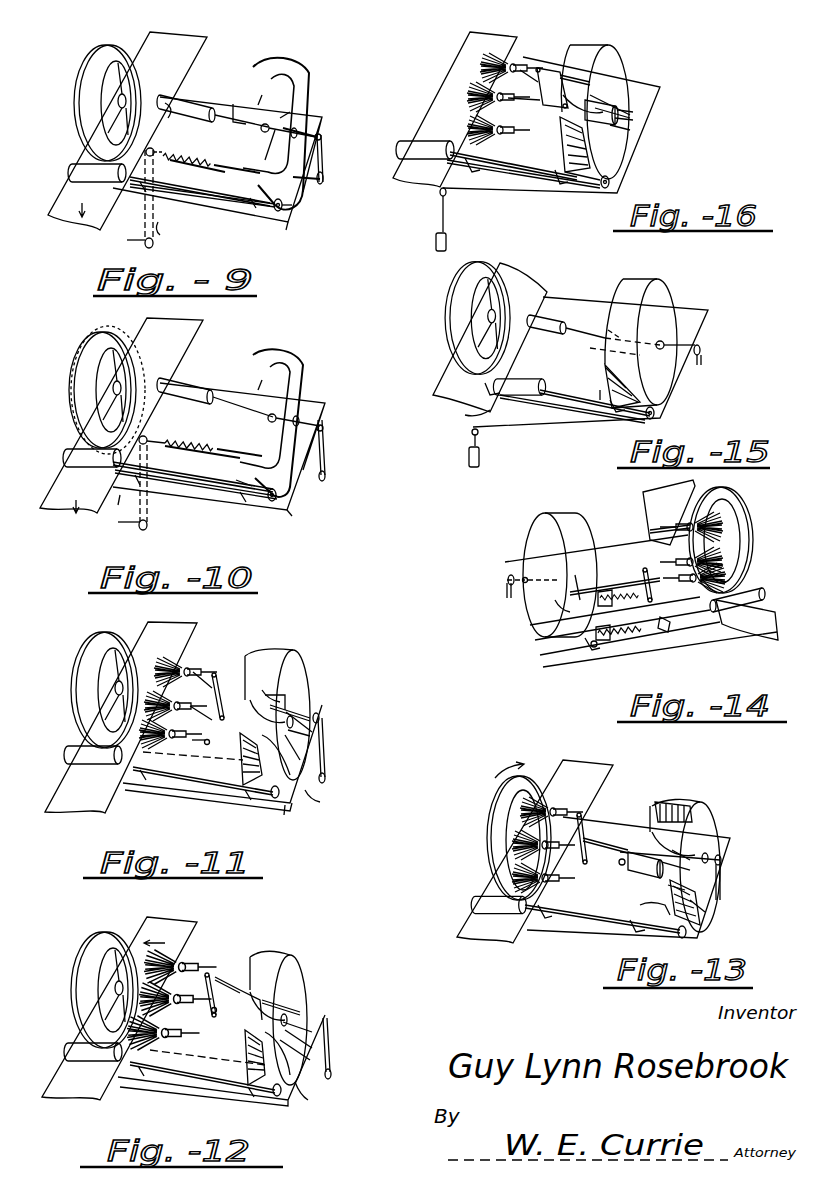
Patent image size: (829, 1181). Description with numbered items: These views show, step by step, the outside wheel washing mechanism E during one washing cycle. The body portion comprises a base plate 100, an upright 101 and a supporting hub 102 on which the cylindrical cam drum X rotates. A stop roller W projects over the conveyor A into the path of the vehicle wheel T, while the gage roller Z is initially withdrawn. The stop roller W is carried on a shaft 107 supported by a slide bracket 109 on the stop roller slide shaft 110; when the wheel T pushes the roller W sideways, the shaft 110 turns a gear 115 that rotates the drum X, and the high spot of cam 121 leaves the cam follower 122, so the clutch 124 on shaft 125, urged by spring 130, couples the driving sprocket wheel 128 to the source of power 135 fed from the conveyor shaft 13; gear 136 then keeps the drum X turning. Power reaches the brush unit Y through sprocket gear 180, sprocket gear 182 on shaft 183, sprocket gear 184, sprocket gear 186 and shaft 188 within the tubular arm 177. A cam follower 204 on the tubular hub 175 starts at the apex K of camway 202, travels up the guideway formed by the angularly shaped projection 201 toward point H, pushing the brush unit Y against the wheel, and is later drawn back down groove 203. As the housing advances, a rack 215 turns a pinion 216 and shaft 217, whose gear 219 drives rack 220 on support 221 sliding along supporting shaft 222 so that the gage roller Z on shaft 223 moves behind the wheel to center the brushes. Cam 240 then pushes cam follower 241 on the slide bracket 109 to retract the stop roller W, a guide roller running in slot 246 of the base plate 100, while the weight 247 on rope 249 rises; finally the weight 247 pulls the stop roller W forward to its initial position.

In FIG. 9, the conveyor shaft 13 is at (180, 245).
In FIG. 10, the conveyor shaft 13 is at (166, 535).
In FIG. 9, the base plate 100 is at (177, 234).
In FIG. 10, the base plate 100 is at (121, 506).
In FIG. 11, the base plate 100 is at (122, 790).
In FIG. 14, the base plate 100 is at (656, 546).
In FIG. 13, the base plate 100 is at (526, 930).
In FIG. 9, the upright 101 is at (244, 108).
In FIG. 10, the upright 101 is at (266, 412).
In FIG. 9, the supporting hub 102 is at (270, 127).
In FIG. 10, the supporting hub 102 is at (277, 417).
In FIG. 15, the supporting hub 102 is at (666, 344).
In FIG. 9, the shaft 107 is at (99, 201).
In FIG. 10, the shaft 107 is at (93, 497).
In FIG. 16, the shaft 107 is at (513, 158).
In FIG. 16, the slide bracket 109 is at (523, 183).
In FIG. 15, the slide bracket 109 is at (615, 420).
In FIG. 9, the stop roller slide shaft 110 is at (198, 199).
In FIG. 10, the stop roller slide shaft 110 is at (190, 505).
In FIG. 16, the stop roller slide shaft 110 is at (480, 181).
In FIG. 9, the gear 115 is at (298, 235).
In FIG. 10, the gear 115 is at (305, 514).
In FIG. 11, the gear 115 is at (293, 818).
In FIG. 16, the gear 115 is at (620, 188).
In FIG. 9, the cam 121 is at (258, 204).
In FIG. 10, the cam 121 is at (228, 502).
In FIG. 9, the cam follower 122 is at (211, 160).
In FIG. 10, the cam follower 122 is at (200, 461).
In FIG. 9, the clutch 124 is at (167, 142).
In FIG. 10, the clutch 124 is at (161, 429).
In FIG. 9, the shaft 125 is at (323, 176).
In FIG. 10, the shaft 125 is at (213, 439).
In FIG. 11, the shaft 125 is at (331, 802).
In FIG. 9, the driving sprocket wheel 128 is at (165, 105).
In FIG. 10, the spring 130 is at (183, 440).
In FIG. 9, the source of power 135 is at (145, 245).
In FIG. 10, the source of power 135 is at (140, 530).
In FIG. 9, the gear 136 is at (306, 212).
In FIG. 10, the gear 136 is at (298, 495).
In FIG. 11, the tubular hub 175 is at (300, 710).
In FIG. 12, the tubular hub 175 is at (290, 1000).
In FIG. 16, the tubular hub 175 is at (622, 95).
In FIG. 14, the tubular hub 175 is at (616, 578).
In FIG. 13, the tubular hub 175 is at (640, 876).
In FIG. 14, the tubular arm 177 is at (579, 590).
In FIG. 9, the sprocket gear 180 is at (323, 185).
In FIG. 10, the sprocket gear 180 is at (326, 473).
In FIG. 11, the sprocket gear 180 is at (327, 776).
In FIG. 12, the sprocket gear 180 is at (328, 1078).
In FIG. 9, the sprocket gear 182 is at (322, 138).
In FIG. 10, the sprocket gear 182 is at (323, 432).
In FIG. 15, the sprocket gear 182 is at (702, 350).
In FIG. 13, the sprocket gear 182 is at (722, 862).
In FIG. 9, the shaft 183 is at (298, 133).
In FIG. 10, the shaft 183 is at (300, 421).
In FIG. 11, the shaft 183 is at (320, 716).
In FIG. 14, the shaft 183 is at (504, 578).
In FIG. 13, the shaft 183 is at (710, 856).
In FIG. 9, the sprocket gear 184 is at (283, 118).
In FIG. 11, the sprocket gear 184 is at (269, 681).
In FIG. 12, the sprocket gear 184 is at (242, 986).
In FIG. 16, the sprocket gear 184 is at (558, 70).
In FIG. 13, the sprocket gear 184 is at (615, 851).
In FIG. 11, the sprocket gear 186 is at (218, 737).
In FIG. 12, the sprocket gear 186 is at (243, 1012).
In FIG. 13, the sprocket gear 186 is at (618, 863).
In FIG. 11, the shaft 188 is at (235, 692).
In FIG. 12, the shaft 188 is at (226, 995).
In FIG. 16, the shaft 188 is at (548, 68).
In FIG. 14, the shaft 188 is at (665, 591).
In FIG. 13, the shaft 188 is at (588, 842).
In FIG. 11, the angularly shaped projection 201 is at (310, 746).
In FIG. 12, the angularly shaped projection 201 is at (314, 1100).
In FIG. 16, the angularly shaped projection 201 is at (594, 100).
In FIG. 13, the angularly shaped projection 201 is at (655, 912).
In FIG. 12, the cam groove 202 is at (318, 1018).
In FIG. 16, the cam groove 202 is at (632, 112).
In FIG. 13, the cam groove 202 is at (706, 904).
In FIG. 12, the cam groove 203 is at (318, 1052).
In FIG. 16, the cam groove 203 is at (628, 126).
In FIG. 11, the cam follower 204 is at (314, 726).
In FIG. 12, the cam follower 204 is at (318, 1038).
In FIG. 16, the cam follower 204 is at (633, 118).
In FIG. 13, the cam follower 204 is at (688, 852).
In FIG. 14, the rack 215 is at (533, 628).
In FIG. 14, the pinion 216 is at (537, 645).
In FIG. 14, the shaft 217 is at (588, 652).
In FIG. 14, the gear 219 is at (607, 646).
In FIG. 14, the rack 220 is at (632, 641).
In FIG. 14, the support 221 is at (672, 631).
In FIG. 9, the supporting shaft 222 is at (233, 104).
In FIG. 14, the supporting shaft 222 is at (541, 658).
In FIG. 14, the shaft 223 is at (732, 643).
In FIG. 11, the cam 240 is at (193, 753).
In FIG. 12, the cam 240 is at (248, 1060).
In FIG. 16, the cam 240 is at (565, 160).
In FIG. 15, the cam 240 is at (603, 388).
In FIG. 13, the cam 240 is at (668, 804).
In FIG. 16, the cam follower 241 is at (600, 190).
In FIG. 15, the cam follower 241 is at (658, 408).
In FIG. 15, the slot 246 is at (456, 417).
In FIG. 16, the weight 247 is at (436, 240).
In FIG. 15, the weight 247 is at (479, 460).
In FIG. 16, the rope 249 is at (445, 208).
In FIG. 15, the rope 249 is at (528, 430).
In FIG. 9, the outside wheel washing mechanism E is at (57, 19).
In FIG. 10, the outside wheel washing mechanism E is at (57, 321).
In FIG. 11, the outside wheel washing mechanism E is at (57, 629).
In FIG. 12, the outside wheel washing mechanism E is at (57, 929).
In FIG. 16, the outside wheel washing mechanism E is at (775, 19).
In FIG. 15, the outside wheel washing mechanism E is at (785, 277).
In FIG. 14, the outside wheel washing mechanism E is at (453, 522).
In FIG. 13, the outside wheel washing mechanism E is at (785, 771).
In FIG. 9, the vehicle wheel T is at (80, 92).
In FIG. 10, the vehicle wheel T is at (74, 380).
In FIG. 11, the vehicle wheel T is at (76, 693).
In FIG. 12, the vehicle wheel T is at (78, 975).
In FIG. 15, the vehicle wheel T is at (448, 318).
In FIG. 14, the vehicle wheel T is at (740, 510).
In FIG. 13, the vehicle wheel T is at (486, 838).
In FIG. 9, the endless belt conveyor A is at (127, 131).
In FIG. 10, the endless belt conveyor A is at (121, 415).
In FIG. 11, the endless belt conveyor A is at (96, 792).
In FIG. 12, the endless belt conveyor A is at (100, 1080).
In FIG. 16, the endless belt conveyor A is at (462, 55).
In FIG. 15, the endless belt conveyor A is at (490, 337).
In FIG. 14, the endless belt conveyor A is at (756, 630).
In FIG. 13, the endless belt conveyor A is at (514, 928).
In FIG. 9, the stop roller W is at (72, 165).
In FIG. 10, the stop roller W is at (67, 450).
In FIG. 11, the stop roller W is at (70, 752).
In FIG. 12, the stop roller W is at (70, 1045).
In FIG. 16, the stop roller W is at (424, 112).
In FIG. 15, the stop roller W is at (528, 384).
In FIG. 14, the stop roller W is at (669, 512).
In FIG. 13, the stop roller W is at (476, 896).
In FIG. 9, the cylindrical cam drum X is at (283, 122).
In FIG. 10, the cylindrical cam drum X is at (281, 417).
In FIG. 11, the cylindrical cam drum X is at (288, 711).
In FIG. 12, the cylindrical cam drum X is at (290, 975).
In FIG. 16, the cylindrical cam drum X is at (600, 99).
In FIG. 15, the cylindrical cam drum X is at (668, 314).
In FIG. 14, the cylindrical cam drum X is at (536, 548).
In FIG. 13, the cylindrical cam drum X is at (705, 826).
In FIG. 9, the gage roller Z is at (196, 100).
In FIG. 10, the gage roller Z is at (197, 386).
In FIG. 11, the gage roller Z is at (170, 658).
In FIG. 15, the gage roller Z is at (525, 322).
In FIG. 14, the gage roller Z is at (765, 590).
In FIG. 13, the gage roller Z is at (578, 812).
In FIG. 11, the brush unit Y is at (178, 695).
In FIG. 12, the brush unit Y is at (180, 948).
In FIG. 16, the brush unit Y is at (470, 112).
In FIG. 14, the brush unit Y is at (742, 538).
In FIG. 13, the brush unit Y is at (506, 808).
In FIG. 11, the point on cam rib H is at (275, 700).
In FIG. 13, the point on cam rib H is at (672, 880).
In FIG. 13, the apex of cam K is at (700, 915).